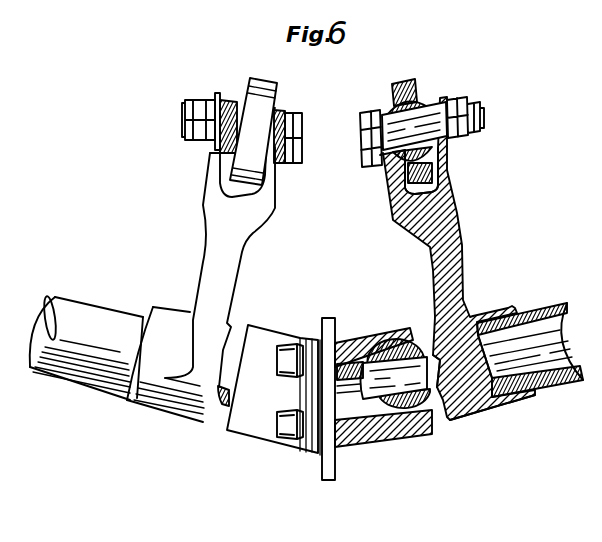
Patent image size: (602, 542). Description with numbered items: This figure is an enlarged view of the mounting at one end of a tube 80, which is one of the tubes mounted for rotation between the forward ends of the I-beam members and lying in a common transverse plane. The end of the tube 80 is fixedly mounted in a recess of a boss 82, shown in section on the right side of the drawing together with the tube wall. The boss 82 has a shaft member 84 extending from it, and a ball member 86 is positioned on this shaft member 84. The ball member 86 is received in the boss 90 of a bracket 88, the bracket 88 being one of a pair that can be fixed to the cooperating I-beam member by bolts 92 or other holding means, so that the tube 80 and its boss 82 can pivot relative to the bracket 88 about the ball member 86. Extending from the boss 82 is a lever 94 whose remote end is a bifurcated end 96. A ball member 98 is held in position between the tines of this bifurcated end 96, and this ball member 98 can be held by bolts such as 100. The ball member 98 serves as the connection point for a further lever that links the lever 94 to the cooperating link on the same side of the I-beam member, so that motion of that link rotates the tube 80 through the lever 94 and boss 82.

The tube 80 is at (109, 288).
The boss 82 is at (475, 406).
The shaft member 84 is at (368, 396).
The ball member 86 is at (223, 404).
The bracket 88 is at (312, 441).
The boss 90 is at (266, 404).
The bolts 92 is at (288, 352).
The lever 94 is at (206, 248).
The bifurcated end 96 is at (452, 170).
The ball member 98 is at (239, 126).
The bolts 100 is at (480, 108).